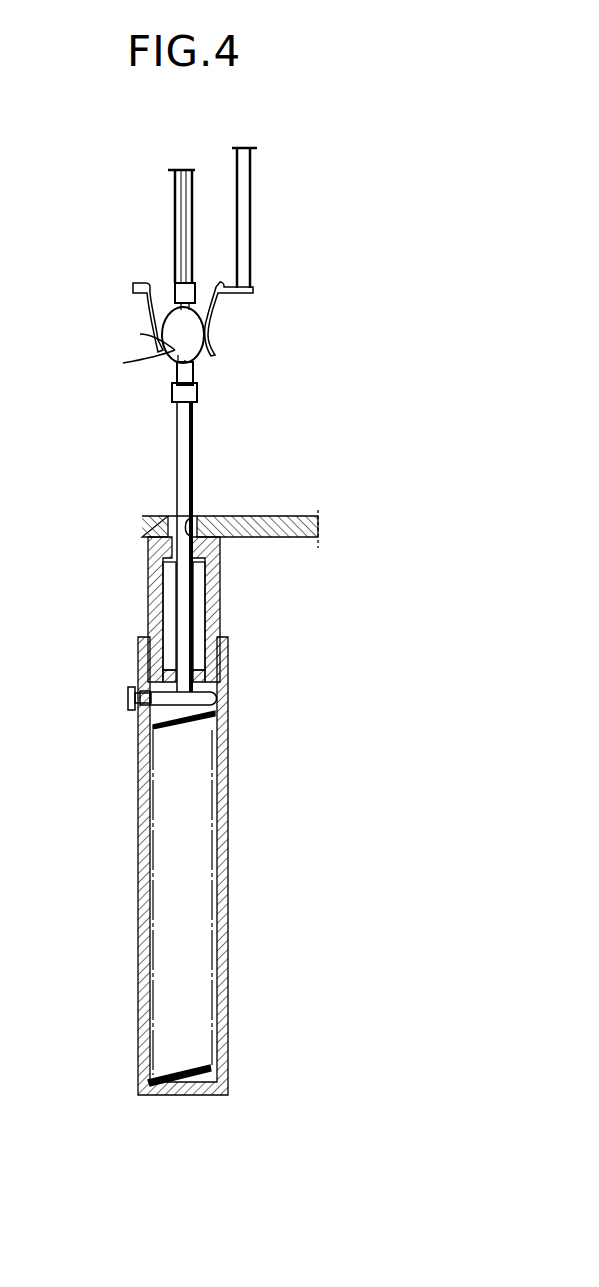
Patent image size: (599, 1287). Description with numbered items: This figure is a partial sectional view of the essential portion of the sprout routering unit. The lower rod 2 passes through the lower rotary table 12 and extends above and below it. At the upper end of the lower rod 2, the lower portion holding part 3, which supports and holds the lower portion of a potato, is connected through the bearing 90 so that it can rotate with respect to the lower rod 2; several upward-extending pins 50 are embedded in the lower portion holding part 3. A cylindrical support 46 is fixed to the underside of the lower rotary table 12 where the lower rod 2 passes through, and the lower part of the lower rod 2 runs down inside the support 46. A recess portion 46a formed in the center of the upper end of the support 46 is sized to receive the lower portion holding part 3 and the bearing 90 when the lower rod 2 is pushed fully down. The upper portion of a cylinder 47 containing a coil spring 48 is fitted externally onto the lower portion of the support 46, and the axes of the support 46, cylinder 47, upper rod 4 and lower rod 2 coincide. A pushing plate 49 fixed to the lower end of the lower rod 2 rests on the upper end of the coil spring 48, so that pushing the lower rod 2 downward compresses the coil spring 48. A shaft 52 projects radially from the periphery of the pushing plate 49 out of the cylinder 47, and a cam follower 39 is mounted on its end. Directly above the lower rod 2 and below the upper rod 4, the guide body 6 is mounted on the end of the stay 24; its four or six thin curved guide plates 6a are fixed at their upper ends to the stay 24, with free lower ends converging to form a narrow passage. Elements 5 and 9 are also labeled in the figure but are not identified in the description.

The lower rod 2 is at (176, 445).
The lower portion holding part 3 is at (193, 372).
The upper rod 4 is at (177, 223).
The connector block 5 is at (172, 287).
The guide body 6 is at (155, 313).
The guide plates 6a is at (140, 334).
The ball joint 9 is at (219, 340).
The lower rotary table 12 is at (277, 527).
The stay 24 is at (247, 220).
The cam follower 39 is at (128, 700).
The support 46 is at (213, 603).
The recess portion 46a is at (192, 503).
The cylinder 47 is at (227, 920).
The coil spring 48 is at (210, 820).
The pushing plate 49 is at (216, 693).
The pins 50 is at (167, 353).
The shaft 52 is at (138, 685).
The bearing 90 is at (197, 393).